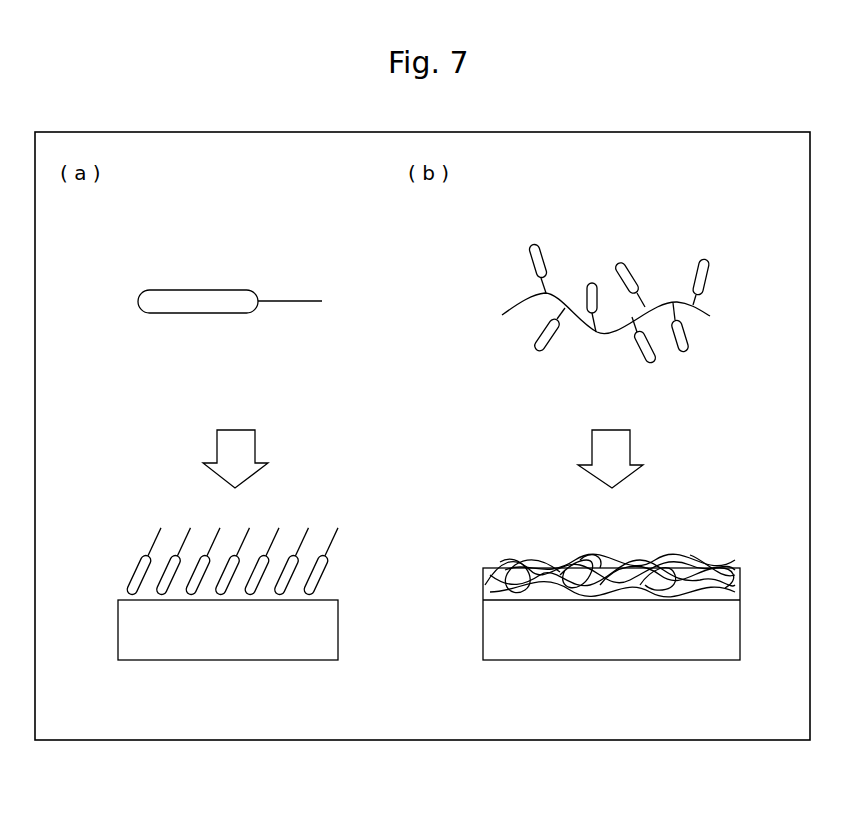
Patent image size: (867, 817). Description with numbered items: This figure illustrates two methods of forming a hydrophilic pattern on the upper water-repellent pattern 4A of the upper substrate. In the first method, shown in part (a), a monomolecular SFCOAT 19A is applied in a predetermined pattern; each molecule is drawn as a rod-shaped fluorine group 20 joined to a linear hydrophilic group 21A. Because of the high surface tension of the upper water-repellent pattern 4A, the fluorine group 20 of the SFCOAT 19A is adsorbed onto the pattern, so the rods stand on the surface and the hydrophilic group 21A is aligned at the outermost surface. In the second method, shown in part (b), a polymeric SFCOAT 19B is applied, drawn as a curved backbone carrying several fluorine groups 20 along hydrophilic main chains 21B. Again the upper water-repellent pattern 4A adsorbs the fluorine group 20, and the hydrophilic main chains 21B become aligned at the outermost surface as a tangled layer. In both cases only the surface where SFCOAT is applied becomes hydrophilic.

The SFCOAT 19A is at (336, 242).
The SFCOAT 19B is at (729, 244).
The fluorine group 20 is at (175, 315).
The hydrophilic group 21A is at (281, 300).
The hydrophilic main chains 21B is at (709, 315).
The upper water-repellent pattern 4A is at (143, 650).